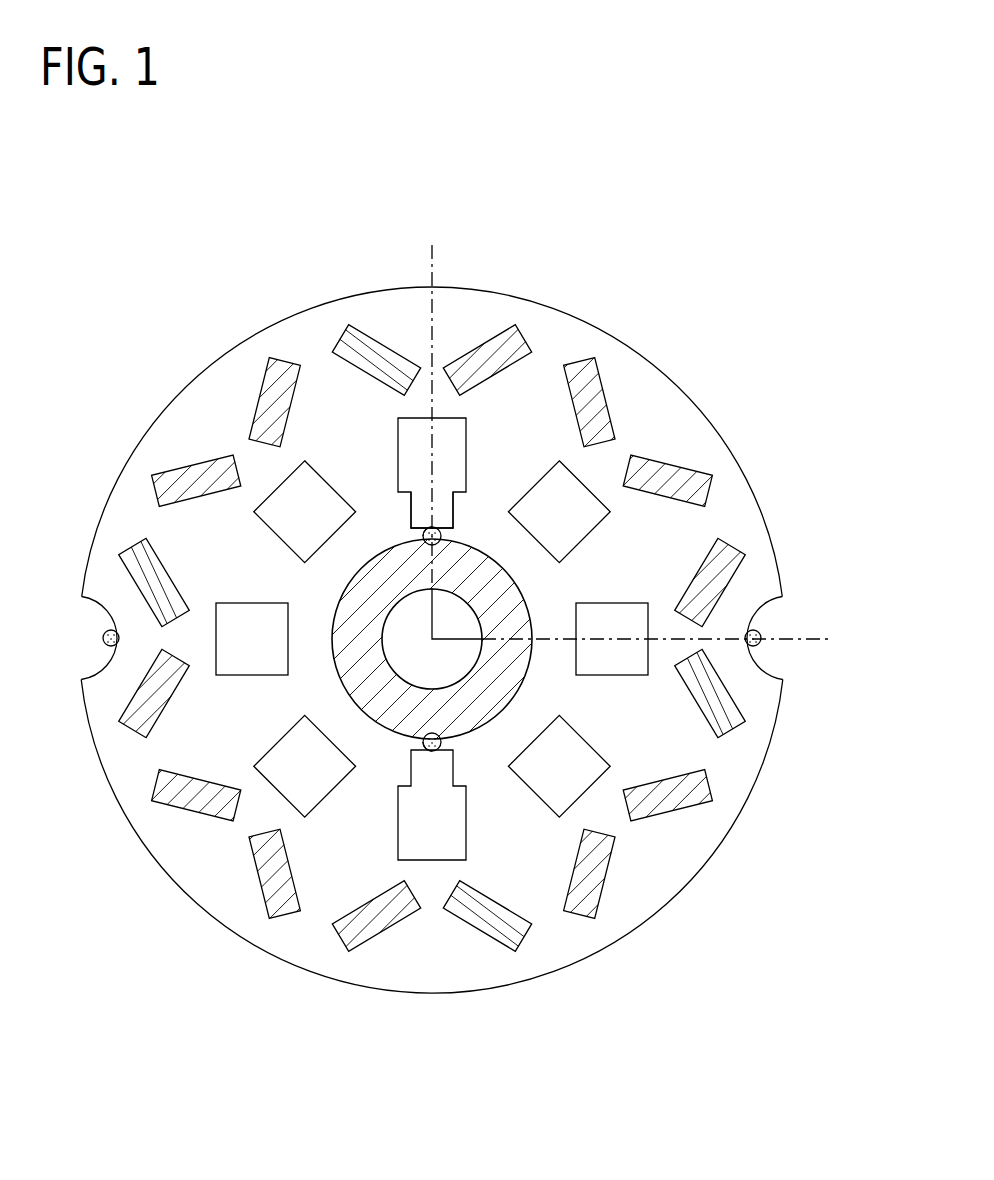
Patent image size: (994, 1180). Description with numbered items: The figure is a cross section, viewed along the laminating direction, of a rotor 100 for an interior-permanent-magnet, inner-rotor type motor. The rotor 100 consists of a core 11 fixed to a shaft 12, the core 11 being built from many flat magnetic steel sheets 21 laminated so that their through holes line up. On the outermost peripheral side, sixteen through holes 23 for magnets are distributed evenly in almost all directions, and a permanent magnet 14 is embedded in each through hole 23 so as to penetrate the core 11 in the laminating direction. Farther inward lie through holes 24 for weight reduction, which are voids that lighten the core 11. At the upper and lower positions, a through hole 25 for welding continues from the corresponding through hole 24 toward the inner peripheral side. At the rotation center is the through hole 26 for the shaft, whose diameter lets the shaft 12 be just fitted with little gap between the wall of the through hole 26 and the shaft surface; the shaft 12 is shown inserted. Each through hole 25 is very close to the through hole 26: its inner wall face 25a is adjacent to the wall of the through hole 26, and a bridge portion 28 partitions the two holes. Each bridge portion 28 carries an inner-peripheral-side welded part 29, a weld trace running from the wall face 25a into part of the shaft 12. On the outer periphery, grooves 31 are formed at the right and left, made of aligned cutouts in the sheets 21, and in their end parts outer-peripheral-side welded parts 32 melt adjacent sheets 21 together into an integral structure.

The rotor 100 is at (626, 231).
The core 11 is at (725, 417).
The shaft 12 is at (505, 616).
The permanent magnet 14 is at (725, 562).
The magnetic steel sheet 21 is at (643, 382).
The through hole for magnet 23 is at (674, 490).
The through hole for weight reduction 24 is at (639, 668).
The through hole for welding 25 is at (438, 517).
The wall face 25a is at (420, 524).
The through hole for shaft 26 is at (356, 675).
The bridge portion 28 is at (442, 538).
The inner-peripheral-side welded part 29 is at (423, 538).
The groove 31 is at (108, 613).
The outer-peripheral-side welded part 32 is at (108, 647).